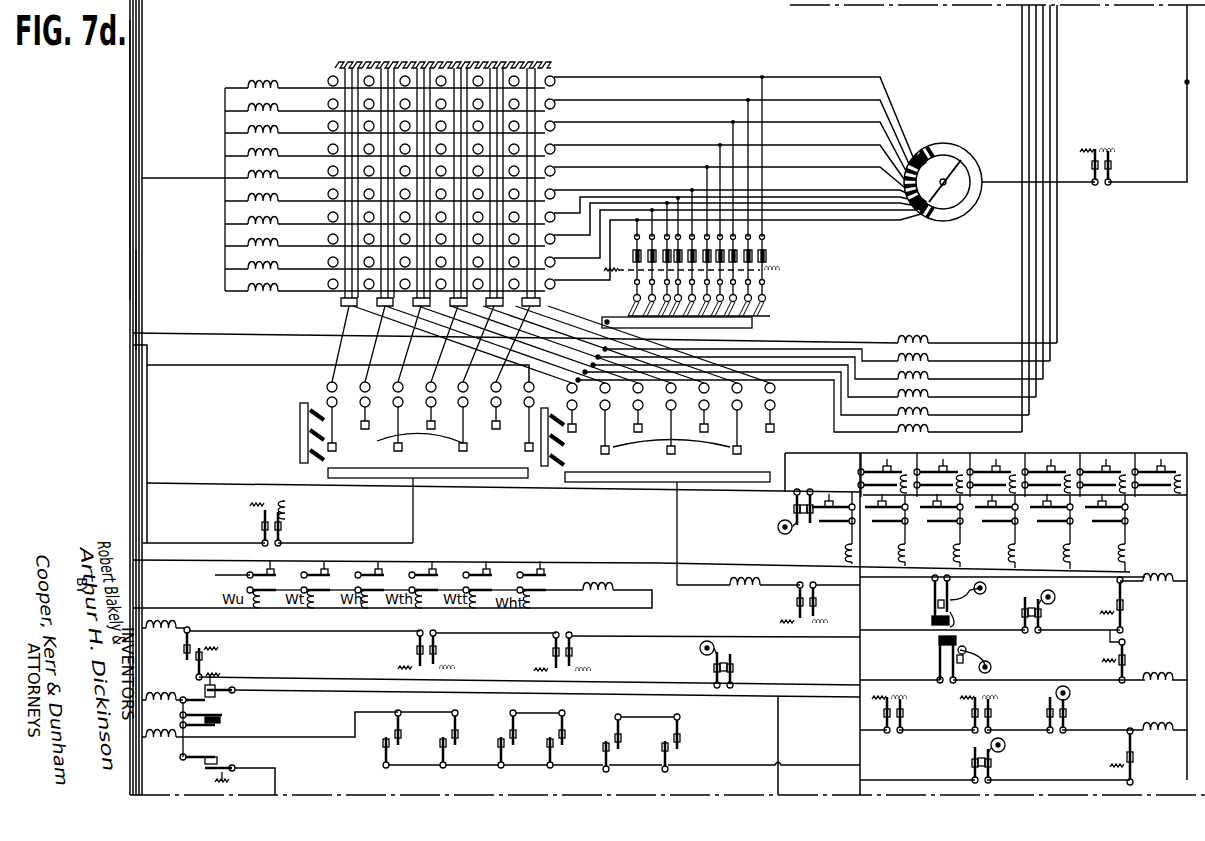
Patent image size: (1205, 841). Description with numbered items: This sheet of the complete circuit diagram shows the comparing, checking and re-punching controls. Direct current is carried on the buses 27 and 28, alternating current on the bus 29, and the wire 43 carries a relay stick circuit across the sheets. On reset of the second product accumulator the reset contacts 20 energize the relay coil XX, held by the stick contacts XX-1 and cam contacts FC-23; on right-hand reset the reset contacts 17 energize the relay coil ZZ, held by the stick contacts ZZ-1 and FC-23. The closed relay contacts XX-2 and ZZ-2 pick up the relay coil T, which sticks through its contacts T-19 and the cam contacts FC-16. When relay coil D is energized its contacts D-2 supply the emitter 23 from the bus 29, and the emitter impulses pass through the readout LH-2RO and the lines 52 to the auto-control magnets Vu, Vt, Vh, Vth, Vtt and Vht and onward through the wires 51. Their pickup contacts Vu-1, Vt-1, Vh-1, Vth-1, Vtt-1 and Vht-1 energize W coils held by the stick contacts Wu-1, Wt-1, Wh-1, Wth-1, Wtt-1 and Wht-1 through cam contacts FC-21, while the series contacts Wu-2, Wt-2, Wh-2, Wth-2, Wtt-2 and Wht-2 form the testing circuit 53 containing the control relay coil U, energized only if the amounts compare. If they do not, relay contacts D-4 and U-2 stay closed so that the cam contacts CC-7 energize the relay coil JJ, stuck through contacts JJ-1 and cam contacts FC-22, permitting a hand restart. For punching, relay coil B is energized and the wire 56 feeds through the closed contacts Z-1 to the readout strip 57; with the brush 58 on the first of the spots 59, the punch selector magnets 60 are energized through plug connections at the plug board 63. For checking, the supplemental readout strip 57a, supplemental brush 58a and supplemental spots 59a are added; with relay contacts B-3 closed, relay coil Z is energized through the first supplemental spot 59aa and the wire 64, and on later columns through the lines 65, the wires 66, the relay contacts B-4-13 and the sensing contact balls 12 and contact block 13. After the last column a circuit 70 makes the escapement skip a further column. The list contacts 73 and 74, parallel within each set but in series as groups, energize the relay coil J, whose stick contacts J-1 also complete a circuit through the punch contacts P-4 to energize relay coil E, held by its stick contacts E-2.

The contact balls 12 is at (745, 315).
The contact block 13 is at (752, 326).
The reset contacts 17 is at (940, 667).
The reset contacts 20 is at (935, 592).
The emitter 23 is at (955, 208).
The D. C. bus 27 is at (133, 297).
The D. C. bus 28 is at (147, 427).
The A. C. bus 29 is at (1187, 82).
The wire 43 is at (133, 112).
The wires 51 is at (1040, 262).
The lines 52 is at (444, 356).
The testing circuit 53 is at (215, 575).
The wire 56 is at (198, 543).
The readout strip 57 is at (440, 482).
The supplemental readout strip 57a is at (645, 484).
The brush 58 is at (300, 438).
The supplemental segment brush 58a is at (540, 457).
The spots 59 is at (340, 447).
The supplemental segment spots 59a is at (671, 442).
The supplemental first spot 59aa is at (575, 484).
The punch selector magnets 60 is at (265, 86).
The plug board 63 is at (340, 392).
The wire 64 is at (243, 340).
The lines 65 is at (625, 140).
The wires 66 is at (748, 188).
The circuit 70 is at (266, 369).
The list contacts 73 is at (655, 727).
The list contacts 74 is at (390, 752).
The LH-2 readout LH-2RO is at (354, 173).
The relay contacts B-4-13 is at (752, 248).
The relay coil B is at (790, 272).
The relay coil D is at (1112, 148).
The relay contacts D-2 is at (1112, 175).
The relay contacts D-4 is at (900, 722).
The control relay coil U is at (1025, 699).
The relay contacts U-2 is at (990, 722).
The relay coil Z is at (282, 507).
The relay contacts Z-1 is at (282, 531).
The relay contacts B-3 is at (815, 598).
The relay coil T is at (178, 628).
The relay contacts T-19 is at (200, 667).
The relay coil E is at (162, 696).
The stick contacts E-2 is at (218, 702).
The relay coil J is at (162, 735).
The stick contacts J-1 is at (220, 765).
The punch contacts P-4 is at (222, 722).
The relay coil XX is at (440, 668).
The stick contacts XX-1 is at (1118, 596).
The relay contacts XX-2 is at (418, 643).
The relay coil ZZ is at (582, 674).
The stick contacts ZZ-1 is at (1118, 661).
The relay contacts ZZ-2 is at (572, 649).
The relay coil JJ is at (1158, 719).
The stick contacts JJ-1 is at (1128, 765).
The cam contacts CC-7 is at (1065, 722).
The cam contacts FC-16 is at (732, 668).
The cam contacts FC-21 is at (795, 507).
The cam contacts FC-22 is at (990, 765).
The cam contacts FC-23 is at (1040, 621).
The auto-control magnet Vu is at (977, 336).
The auto-control magnet Vt is at (826, 354).
The auto-control magnet Vh is at (819, 368).
The auto-control magnet Vth is at (813, 381).
The auto-control magnet Vtt is at (806, 393).
The auto-control magnet Vht is at (799, 406).
The pickup contacts Vu-1 is at (1140, 462).
The pickup contacts Vt-1 is at (1087, 462).
The pickup contacts Vh-1 is at (1033, 462).
The pickup contacts Vth-1 is at (996, 467).
The pickup contacts Vtt-1 is at (939, 466).
The pickup contacts Vht-1 is at (857, 466).
The stick contacts Wu-1 is at (1103, 533).
The stick contacts Wt-1 is at (1047, 532).
The stick contacts Wh-1 is at (993, 532).
The stick contacts Wth-1 is at (939, 532).
The stick contacts Wtt-1 is at (885, 532).
The stick contacts Wht-1 is at (840, 556).
The series contacts Wu-2 is at (274, 573).
The series contacts Wt-2 is at (335, 559).
The series contacts Wh-2 is at (392, 559).
The series contacts Wth-2 is at (450, 559).
The series contacts Wtt-2 is at (500, 553).
The series contacts Wht-2 is at (556, 562).